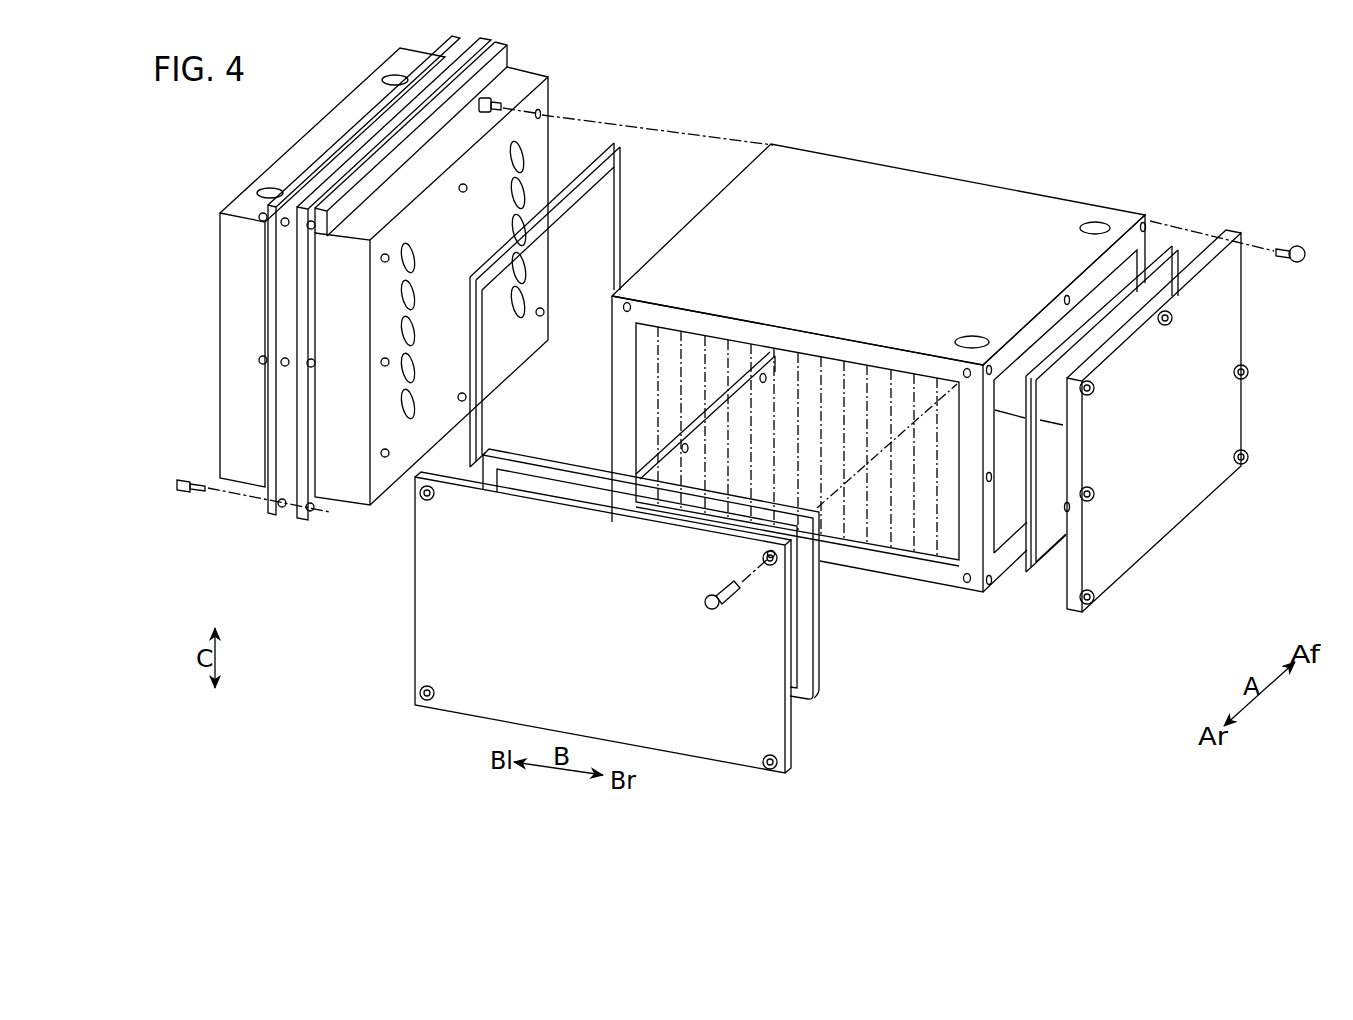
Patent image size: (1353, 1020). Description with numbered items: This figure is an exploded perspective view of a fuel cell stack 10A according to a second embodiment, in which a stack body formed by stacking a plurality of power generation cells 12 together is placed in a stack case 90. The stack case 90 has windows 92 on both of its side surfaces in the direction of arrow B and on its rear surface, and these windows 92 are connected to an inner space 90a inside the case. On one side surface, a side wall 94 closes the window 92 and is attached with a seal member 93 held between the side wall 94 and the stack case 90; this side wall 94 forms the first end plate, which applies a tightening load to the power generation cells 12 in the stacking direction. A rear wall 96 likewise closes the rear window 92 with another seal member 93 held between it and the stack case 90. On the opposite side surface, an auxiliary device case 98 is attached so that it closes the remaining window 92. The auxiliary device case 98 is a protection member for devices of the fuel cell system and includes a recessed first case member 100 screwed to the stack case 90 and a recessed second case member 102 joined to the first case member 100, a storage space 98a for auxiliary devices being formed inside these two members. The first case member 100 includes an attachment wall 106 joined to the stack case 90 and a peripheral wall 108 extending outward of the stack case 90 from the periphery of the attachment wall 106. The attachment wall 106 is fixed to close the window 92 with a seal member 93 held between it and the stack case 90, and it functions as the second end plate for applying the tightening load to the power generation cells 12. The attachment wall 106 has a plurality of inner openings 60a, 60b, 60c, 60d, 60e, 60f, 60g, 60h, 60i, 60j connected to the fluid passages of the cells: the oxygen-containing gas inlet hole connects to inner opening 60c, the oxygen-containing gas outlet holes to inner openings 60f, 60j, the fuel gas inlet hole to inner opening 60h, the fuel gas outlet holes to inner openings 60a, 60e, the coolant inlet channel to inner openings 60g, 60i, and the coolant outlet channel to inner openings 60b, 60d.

The fuel cell stack 10A is at (1043, 101).
The power generation cells 12 is at (857, 372).
The inner opening 60a is at (402, 262).
The inner opening 60b is at (402, 298).
The inner opening 60c is at (402, 334).
The inner opening 60d is at (402, 371).
The inner opening 60e is at (402, 407).
The inner opening 60f is at (524, 157).
The inner opening 60g is at (511, 193).
The inner opening 60h is at (525, 232).
The inner opening 60i is at (525, 268).
The inner opening 60j is at (525, 302).
The stack case 90 is at (932, 367).
The inner space 90a is at (822, 195).
The windows 92 is at (648, 458).
The seal member 93 is at (622, 190).
The side wall 94 is at (1176, 496).
The rear wall 96 is at (440, 655).
The auxiliary device case 98 is at (334, 331).
The storage space 98a is at (302, 164).
The first case member 100 is at (354, 507).
The second case member 102 is at (265, 490).
The attachment wall 106 is at (544, 268).
The peripheral wall 108 is at (512, 78).